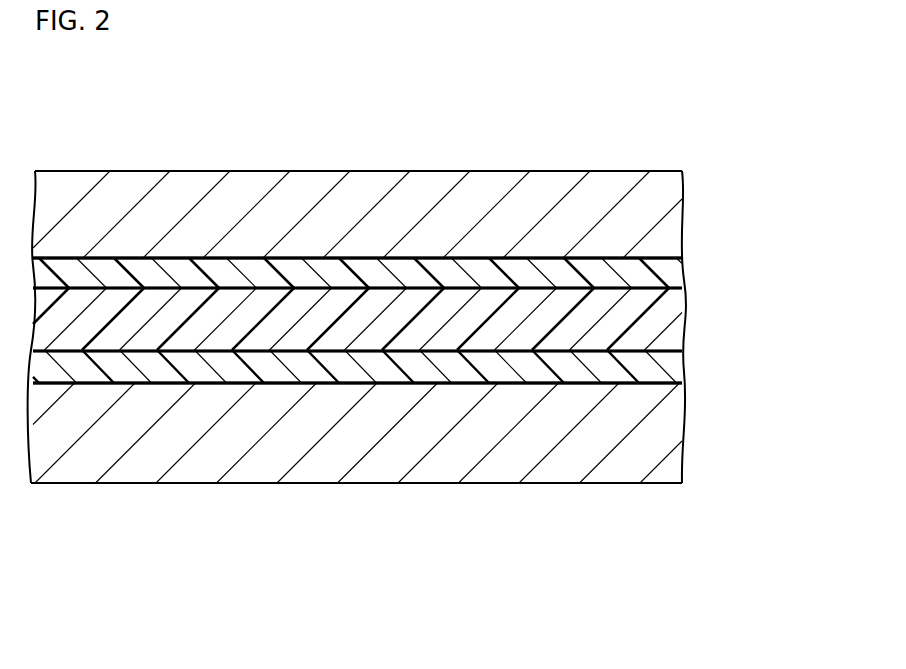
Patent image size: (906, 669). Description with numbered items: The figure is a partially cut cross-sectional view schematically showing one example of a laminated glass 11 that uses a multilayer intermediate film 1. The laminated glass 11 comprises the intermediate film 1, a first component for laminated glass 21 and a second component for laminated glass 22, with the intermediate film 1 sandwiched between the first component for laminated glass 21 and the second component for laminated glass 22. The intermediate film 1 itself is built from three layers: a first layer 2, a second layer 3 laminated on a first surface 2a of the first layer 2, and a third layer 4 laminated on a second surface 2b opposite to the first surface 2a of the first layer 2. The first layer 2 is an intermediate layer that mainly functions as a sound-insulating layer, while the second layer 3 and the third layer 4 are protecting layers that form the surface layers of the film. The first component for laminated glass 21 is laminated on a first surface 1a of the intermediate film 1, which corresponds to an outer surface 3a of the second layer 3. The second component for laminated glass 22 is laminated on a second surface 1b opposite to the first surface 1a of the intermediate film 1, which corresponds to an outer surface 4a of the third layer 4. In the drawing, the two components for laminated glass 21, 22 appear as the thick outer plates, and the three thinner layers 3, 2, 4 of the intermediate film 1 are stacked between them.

The laminated glass 11 is at (167, 132).
The intermediate film 1 is at (273, 249).
The first surface 1a is at (368, 260).
The second surface 1b is at (363, 385).
The first layer 2 is at (696, 330).
The first surface 2a is at (473, 270).
The second surface 2b is at (465, 385).
The second layer 3 is at (696, 280).
The outer surface 3a is at (597, 260).
The third layer 4 is at (696, 372).
The outer surface 4a is at (592, 385).
The first component for laminated glass 21 is at (683, 210).
The second component for laminated glass 22 is at (683, 447).